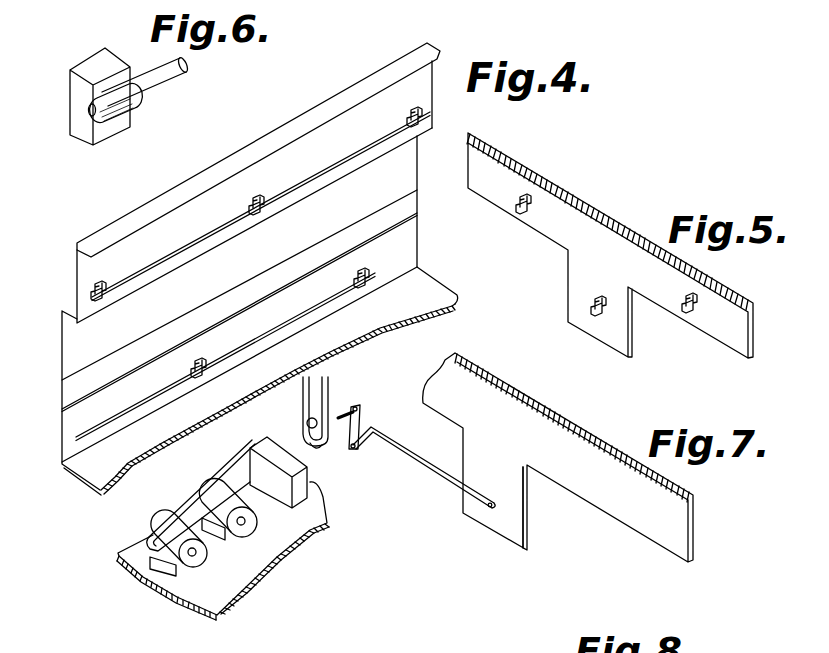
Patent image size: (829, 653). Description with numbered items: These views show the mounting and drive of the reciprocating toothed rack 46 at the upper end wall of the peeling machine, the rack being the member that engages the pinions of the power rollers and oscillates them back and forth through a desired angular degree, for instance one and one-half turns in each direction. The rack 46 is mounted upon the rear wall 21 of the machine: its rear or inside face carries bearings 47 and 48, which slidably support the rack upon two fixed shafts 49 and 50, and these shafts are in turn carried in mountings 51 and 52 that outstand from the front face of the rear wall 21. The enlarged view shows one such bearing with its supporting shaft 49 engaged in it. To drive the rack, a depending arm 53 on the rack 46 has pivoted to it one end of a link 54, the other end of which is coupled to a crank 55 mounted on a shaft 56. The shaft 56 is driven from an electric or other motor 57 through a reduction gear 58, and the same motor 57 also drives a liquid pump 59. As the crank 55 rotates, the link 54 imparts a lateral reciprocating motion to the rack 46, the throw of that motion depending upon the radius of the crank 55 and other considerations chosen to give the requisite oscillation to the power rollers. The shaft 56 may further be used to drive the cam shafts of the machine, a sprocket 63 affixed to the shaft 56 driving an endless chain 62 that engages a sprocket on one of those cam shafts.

In FIG. 4, the rear wall 21 is at (60, 412).
In FIG. 5, the reciprocating toothed rack 46 is at (600, 236).
In FIG. 7, the reciprocating toothed rack 46 is at (677, 528).
In FIG. 5, the bearing 47 is at (520, 218).
In FIG. 5, the bearing 48 is at (598, 320).
In FIG. 4, the fixed shaft 49 is at (181, 252).
In FIG. 6, the fixed shaft 49 is at (173, 78).
In FIG. 4, the fixed shaft 50 is at (302, 317).
In FIG. 4, the mounting 51 is at (106, 301).
In FIG. 6, the mounting 51 is at (78, 128).
In FIG. 4, the mounting 52 is at (194, 372).
In FIG. 7, the depending arm 53 is at (517, 528).
In FIG. 4, the link 54 is at (437, 472).
In FIG. 4, the crank 55 is at (347, 440).
In FIG. 4, the shaft 56 is at (341, 412).
In FIG. 4, the motor 57 is at (247, 524).
In FIG. 4, the reduction gear 58 is at (303, 491).
In FIG. 4, the liquid pump 59 is at (188, 568).
In FIG. 4, the endless chain 62 is at (302, 398).
In FIG. 4, the sprocket 63 is at (314, 447).